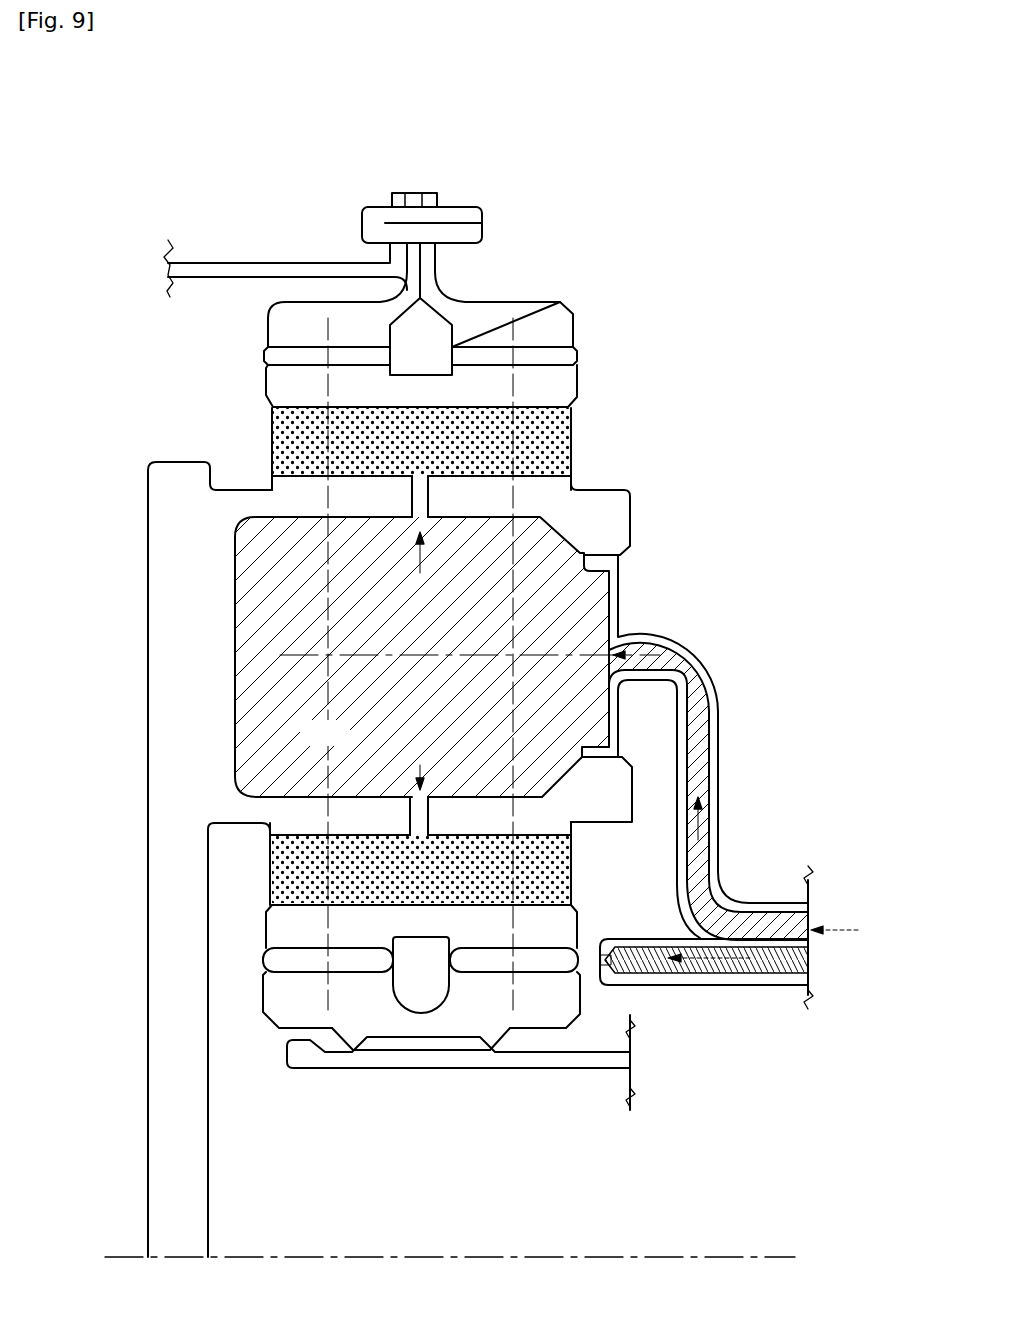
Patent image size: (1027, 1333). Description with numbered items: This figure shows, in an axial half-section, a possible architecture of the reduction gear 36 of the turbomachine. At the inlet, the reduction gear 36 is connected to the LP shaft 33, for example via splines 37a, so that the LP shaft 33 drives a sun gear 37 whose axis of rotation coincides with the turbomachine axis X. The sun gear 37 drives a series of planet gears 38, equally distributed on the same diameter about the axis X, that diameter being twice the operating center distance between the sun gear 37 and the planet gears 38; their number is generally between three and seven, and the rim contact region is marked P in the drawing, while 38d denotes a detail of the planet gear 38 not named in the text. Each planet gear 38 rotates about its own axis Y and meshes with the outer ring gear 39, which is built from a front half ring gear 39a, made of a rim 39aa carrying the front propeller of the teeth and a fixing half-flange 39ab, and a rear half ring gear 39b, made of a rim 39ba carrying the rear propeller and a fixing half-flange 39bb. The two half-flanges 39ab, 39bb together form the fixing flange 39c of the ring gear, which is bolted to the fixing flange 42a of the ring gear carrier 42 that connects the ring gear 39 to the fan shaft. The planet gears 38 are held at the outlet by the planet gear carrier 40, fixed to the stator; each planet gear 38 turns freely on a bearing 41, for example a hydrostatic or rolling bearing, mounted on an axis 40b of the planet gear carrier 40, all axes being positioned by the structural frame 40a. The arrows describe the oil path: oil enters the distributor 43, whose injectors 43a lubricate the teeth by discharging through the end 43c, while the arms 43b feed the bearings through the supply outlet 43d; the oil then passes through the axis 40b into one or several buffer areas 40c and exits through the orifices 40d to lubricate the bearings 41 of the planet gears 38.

The LP shaft 33 is at (565, 1060).
The reduction gear 36 is at (742, 414).
The sun gear 37 is at (280, 990).
The splines 37a is at (400, 1043).
The planet gear 38 is at (287, 927).
The ring portion of lower plate 38d is at (267, 960).
The ring gear 39 is at (573, 306).
The front half ring gear 39a is at (284, 326).
The rim 39aa is at (300, 312).
The fixing half-flange 39ab is at (407, 198).
The rear half ring gear 39b is at (556, 325).
The rim 39ba is at (498, 313).
The fixing half-flange 39bb is at (432, 198).
The fixing flange 39c is at (487, 120).
The planet gear carrier 40 is at (607, 504).
The structural frame 40a is at (187, 568).
The axis 40b is at (607, 797).
The buffer area 40c is at (422, 657).
The orifice 40d is at (483, 500).
The bearing 41 is at (562, 425).
The ring gear carrier 42 is at (196, 263).
The fixing flange 42a is at (392, 202).
The distributor 43 is at (786, 839).
The injector 43a is at (755, 975).
The arm 43b is at (712, 720).
The end 43c is at (602, 987).
The supply outlet 43d is at (600, 560).
The pressing point P is at (327, 1005).
The axis of rotation X is at (700, 1257).
The axis Y is at (607, 613).